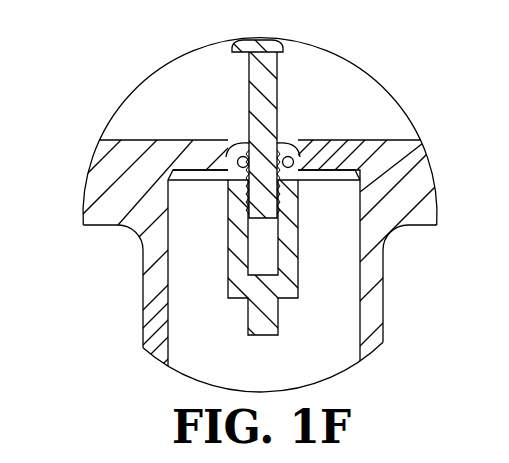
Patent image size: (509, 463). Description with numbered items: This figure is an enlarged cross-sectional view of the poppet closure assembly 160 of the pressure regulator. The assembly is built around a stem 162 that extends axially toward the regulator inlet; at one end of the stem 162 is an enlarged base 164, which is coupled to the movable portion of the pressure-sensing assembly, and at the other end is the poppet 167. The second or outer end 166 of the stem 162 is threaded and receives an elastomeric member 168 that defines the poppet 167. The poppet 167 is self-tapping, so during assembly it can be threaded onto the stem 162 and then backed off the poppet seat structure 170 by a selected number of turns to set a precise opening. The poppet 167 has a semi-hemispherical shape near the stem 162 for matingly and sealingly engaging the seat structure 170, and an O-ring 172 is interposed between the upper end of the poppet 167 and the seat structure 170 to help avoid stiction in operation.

The poppet closure assembly 160 is at (297, 126).
The stem 162 is at (252, 100).
The enlarged base 164 is at (260, 40).
The outer end 166 is at (236, 146).
The poppet 167 is at (223, 252).
The elastomeric member 168 is at (297, 240).
The poppet seat structure 170 is at (291, 163).
The O-ring 172 is at (293, 168).